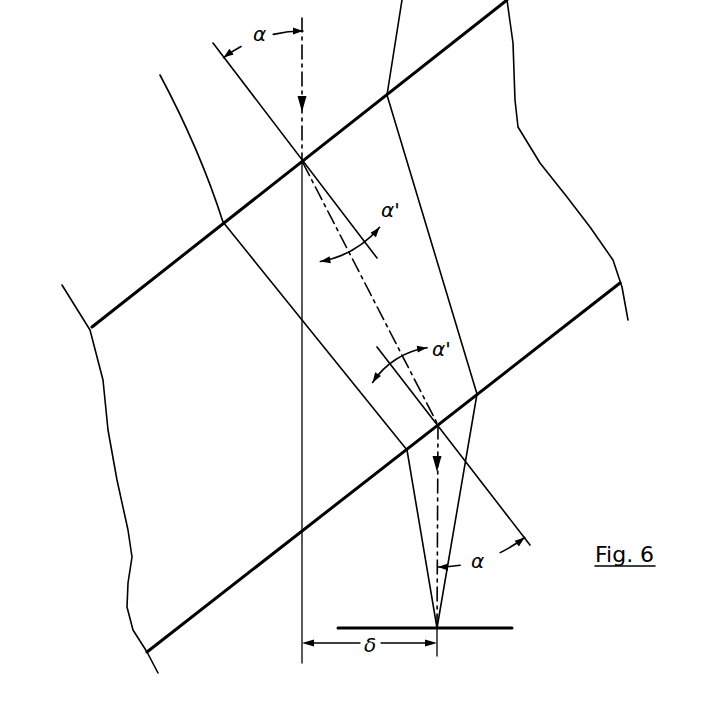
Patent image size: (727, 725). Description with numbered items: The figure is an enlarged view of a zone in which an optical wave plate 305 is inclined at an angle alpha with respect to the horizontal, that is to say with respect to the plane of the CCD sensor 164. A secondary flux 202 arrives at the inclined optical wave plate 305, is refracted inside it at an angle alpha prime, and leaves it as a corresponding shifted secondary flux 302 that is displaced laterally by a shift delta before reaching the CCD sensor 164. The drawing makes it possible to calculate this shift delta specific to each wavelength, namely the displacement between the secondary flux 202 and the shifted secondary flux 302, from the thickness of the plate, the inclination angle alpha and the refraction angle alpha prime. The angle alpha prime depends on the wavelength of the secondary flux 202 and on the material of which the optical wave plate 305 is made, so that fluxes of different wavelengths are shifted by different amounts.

The secondary flux 202 is at (303, 63).
The shifted secondary flux 302 is at (435, 510).
The optical wave plate 305 is at (583, 296).
The CCD sensor 164 is at (497, 631).